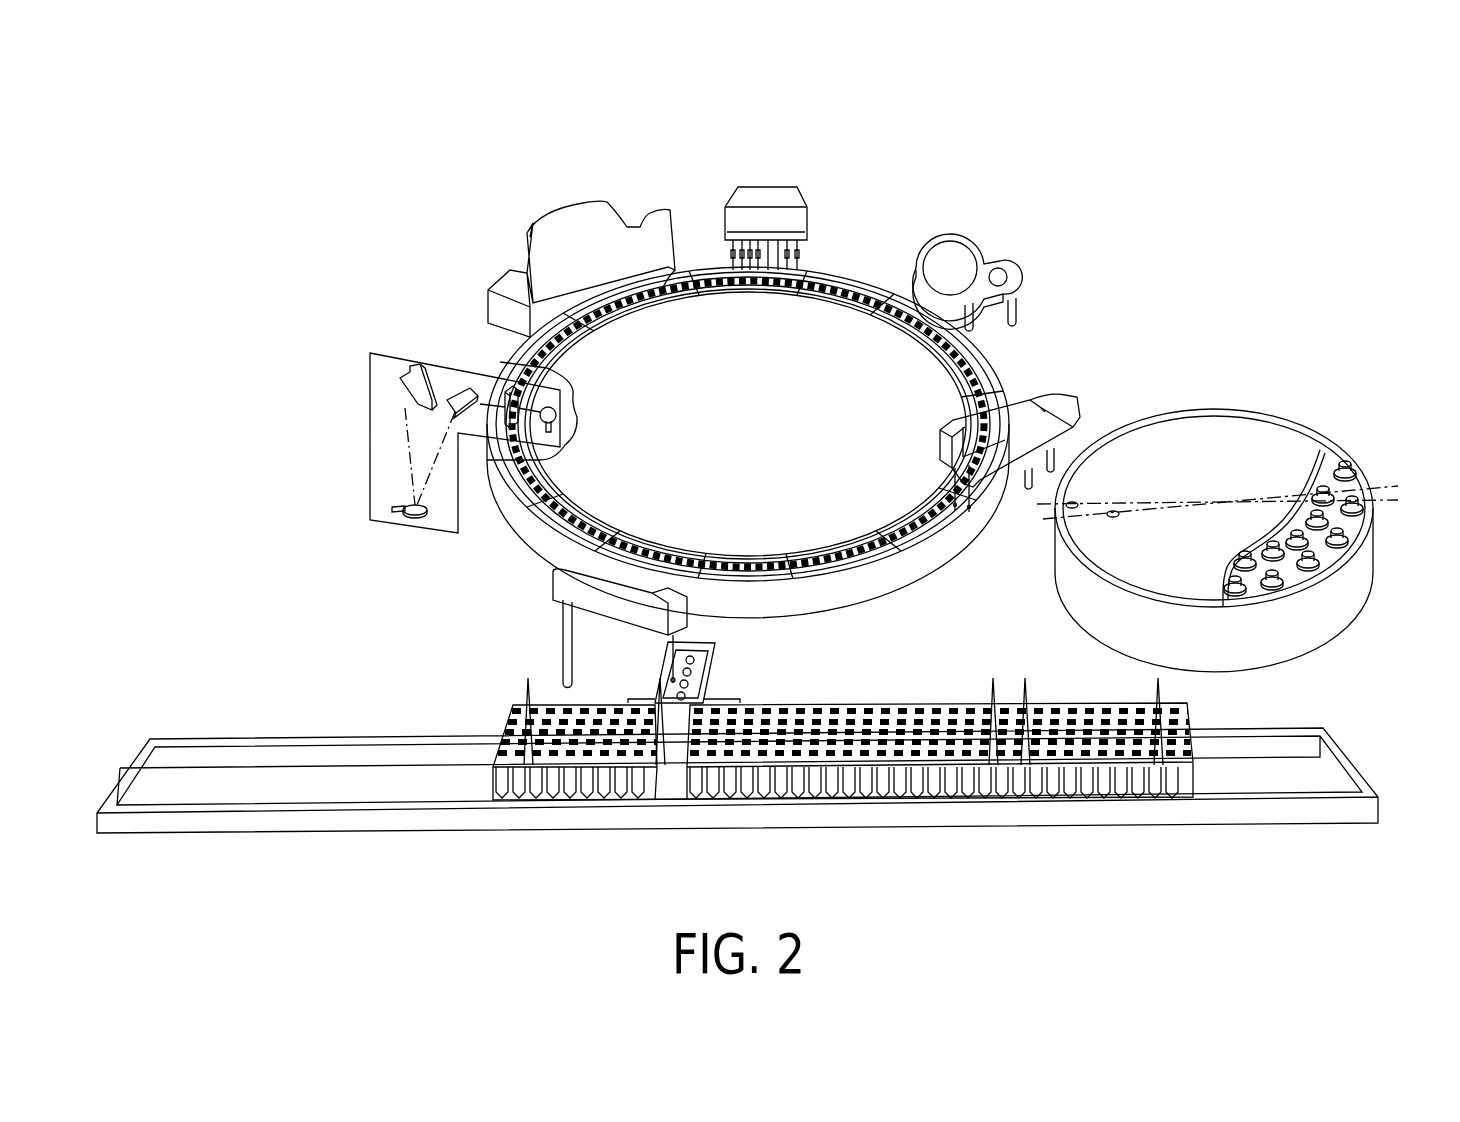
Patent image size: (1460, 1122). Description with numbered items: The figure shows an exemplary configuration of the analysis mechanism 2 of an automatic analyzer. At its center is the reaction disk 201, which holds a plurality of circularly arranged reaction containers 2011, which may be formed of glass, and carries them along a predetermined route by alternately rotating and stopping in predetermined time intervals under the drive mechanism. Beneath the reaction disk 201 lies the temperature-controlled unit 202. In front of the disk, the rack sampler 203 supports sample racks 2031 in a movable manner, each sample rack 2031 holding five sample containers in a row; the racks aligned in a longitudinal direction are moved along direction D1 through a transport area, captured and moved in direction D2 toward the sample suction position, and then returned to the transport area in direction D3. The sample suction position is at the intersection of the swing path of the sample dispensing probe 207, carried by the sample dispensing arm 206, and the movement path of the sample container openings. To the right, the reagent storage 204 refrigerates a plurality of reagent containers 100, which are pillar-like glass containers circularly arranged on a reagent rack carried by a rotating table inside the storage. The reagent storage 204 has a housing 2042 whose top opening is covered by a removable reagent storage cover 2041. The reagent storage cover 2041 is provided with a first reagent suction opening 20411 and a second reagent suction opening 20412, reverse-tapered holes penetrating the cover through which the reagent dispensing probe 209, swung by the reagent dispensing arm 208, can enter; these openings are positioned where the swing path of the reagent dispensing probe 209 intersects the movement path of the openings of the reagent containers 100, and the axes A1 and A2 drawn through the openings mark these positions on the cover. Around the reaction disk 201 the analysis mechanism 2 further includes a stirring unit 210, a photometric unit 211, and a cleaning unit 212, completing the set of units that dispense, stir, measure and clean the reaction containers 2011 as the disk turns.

The analysis mechanism 2 is at (810, 118).
The reaction disk 201 is at (876, 574).
The reaction containers 2011 is at (503, 397).
The temperature-controlled unit 202 is at (818, 605).
The rack sampler 203 is at (243, 745).
The sample racks 2031 is at (835, 800).
The reagent storage 204 is at (1222, 502).
The reagent storage cover 2041 is at (1220, 408).
The first reagent suction opening 20411 is at (1073, 502).
The second reagent suction opening 20412 is at (1113, 517).
The housing 2042 is at (1328, 620).
The reagent containers 100 is at (1352, 478).
The sample dispensing arm 206 is at (597, 622).
The sample dispensing probe 207 is at (715, 645).
The reagent dispensing arm 208 is at (1055, 395).
The reagent dispensing probe 209 is at (969, 507).
The stirring unit 210 is at (968, 255).
The photometric unit 211 is at (400, 355).
The cleaning unit 212 is at (767, 190).
The axis A1 is at (1217, 500).
The axis A2 is at (1217, 500).
The direction D1 is at (1058, 847).
The direction D2 is at (685, 831).
The direction D3 is at (651, 830).